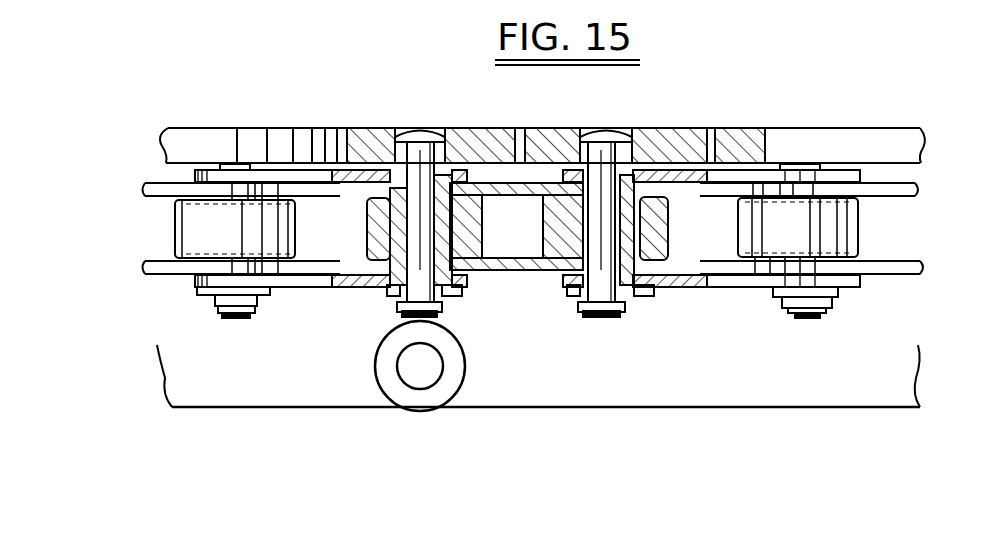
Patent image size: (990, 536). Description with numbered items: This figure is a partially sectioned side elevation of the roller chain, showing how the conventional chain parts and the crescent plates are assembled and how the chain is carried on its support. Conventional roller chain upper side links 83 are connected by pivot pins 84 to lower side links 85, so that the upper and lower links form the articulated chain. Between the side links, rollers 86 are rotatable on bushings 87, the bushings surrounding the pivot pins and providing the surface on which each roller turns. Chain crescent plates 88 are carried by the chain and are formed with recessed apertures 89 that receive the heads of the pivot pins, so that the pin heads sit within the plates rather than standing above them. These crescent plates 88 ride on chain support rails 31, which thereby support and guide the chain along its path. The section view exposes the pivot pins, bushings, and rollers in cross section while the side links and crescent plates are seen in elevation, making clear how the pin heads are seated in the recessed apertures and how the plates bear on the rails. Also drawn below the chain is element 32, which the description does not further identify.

The chain support rail 31 is at (847, 397).
The shaft 32 is at (430, 412).
The upper side link 83 is at (867, 192).
The pivot pin 84 is at (573, 297).
The lower side link 85 is at (698, 278).
The roller 86 is at (362, 222).
The bushing 87 is at (577, 215).
The chain crescent plate 88 is at (523, 128).
The recessed aperture 89 is at (584, 129).